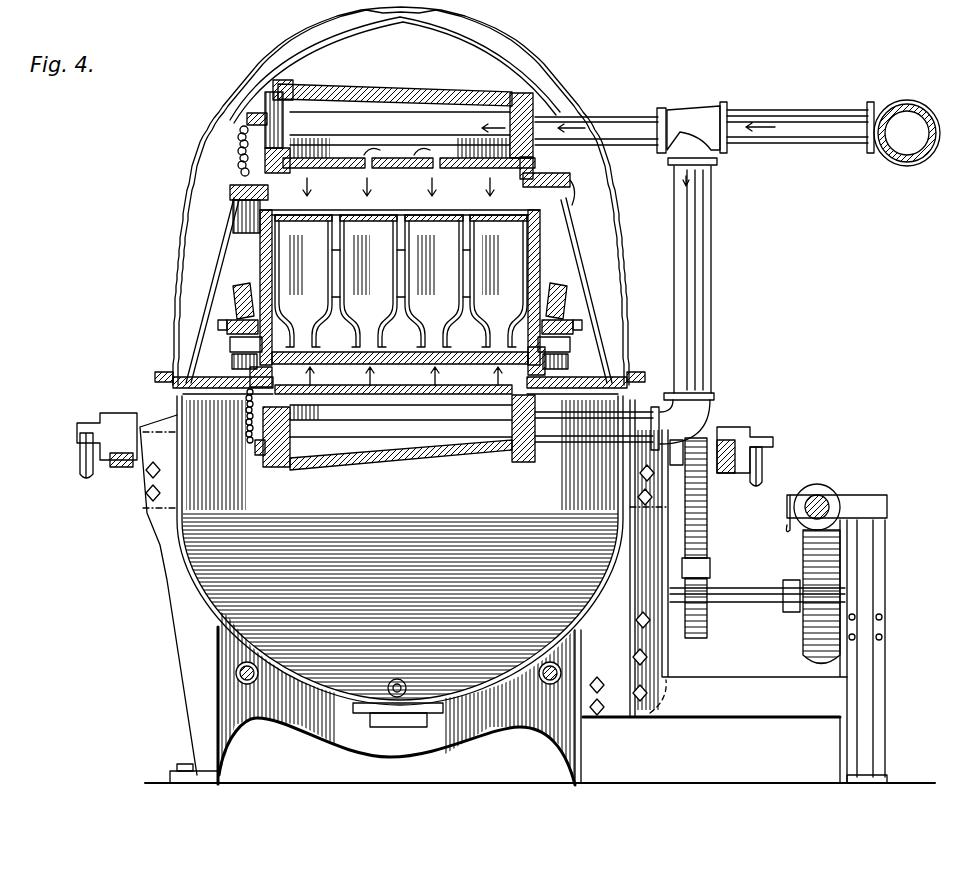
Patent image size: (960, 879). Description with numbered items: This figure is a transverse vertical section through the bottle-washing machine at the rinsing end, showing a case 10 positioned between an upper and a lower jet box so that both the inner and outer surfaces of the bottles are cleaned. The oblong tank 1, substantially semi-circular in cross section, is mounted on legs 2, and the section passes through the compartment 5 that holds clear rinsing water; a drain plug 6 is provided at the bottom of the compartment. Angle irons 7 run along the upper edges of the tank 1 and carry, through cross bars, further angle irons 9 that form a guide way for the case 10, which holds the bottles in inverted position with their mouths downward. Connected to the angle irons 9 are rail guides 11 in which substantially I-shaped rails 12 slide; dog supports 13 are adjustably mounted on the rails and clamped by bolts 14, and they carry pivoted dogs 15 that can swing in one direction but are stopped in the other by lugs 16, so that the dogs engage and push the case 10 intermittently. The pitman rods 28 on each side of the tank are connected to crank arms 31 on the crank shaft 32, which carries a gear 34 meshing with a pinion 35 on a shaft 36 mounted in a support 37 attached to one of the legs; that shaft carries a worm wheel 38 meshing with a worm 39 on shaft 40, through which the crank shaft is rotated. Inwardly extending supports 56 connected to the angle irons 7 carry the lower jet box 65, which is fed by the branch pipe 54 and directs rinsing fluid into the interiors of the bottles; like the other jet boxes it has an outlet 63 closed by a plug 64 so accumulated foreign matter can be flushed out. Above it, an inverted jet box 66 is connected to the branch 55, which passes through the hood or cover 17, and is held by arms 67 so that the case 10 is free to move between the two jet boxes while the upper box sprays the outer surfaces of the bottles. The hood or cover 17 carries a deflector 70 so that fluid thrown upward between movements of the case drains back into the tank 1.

The tank 1 is at (183, 573).
The legs 2 is at (200, 672).
The compartment 5 is at (488, 501).
The drain plug 6 is at (400, 703).
The angle irons 7 is at (157, 375).
The angle irons 9 is at (520, 375).
The case 10 is at (550, 250).
The rail guides 11 is at (160, 388).
The rails 12 is at (240, 350).
The dog supports 13 is at (243, 303).
The bolts 14 is at (230, 340).
The dogs 15 is at (227, 318).
The lugs 16 is at (238, 283).
The hood or cover 17 is at (212, 118).
The pitman rods 28 is at (80, 460).
The crank arms 31 is at (120, 467).
The crank shaft 32 is at (77, 448).
The gear 34 is at (707, 530).
The pinion 35 is at (712, 575).
The shaft 36 is at (755, 603).
The support 37 is at (872, 655).
The worm wheel 38 is at (803, 645).
The worm 39 is at (830, 490).
The shaft 40 is at (840, 500).
The branch 54 is at (695, 230).
The branch 55 is at (807, 103).
The supports 56 is at (583, 395).
The outlet 63 is at (347, 452).
The plug 64 is at (263, 457).
The jet box 65 is at (463, 440).
The inverted jet box 66 is at (407, 153).
The arms 67 is at (230, 200).
The deflector 70 is at (436, 28).